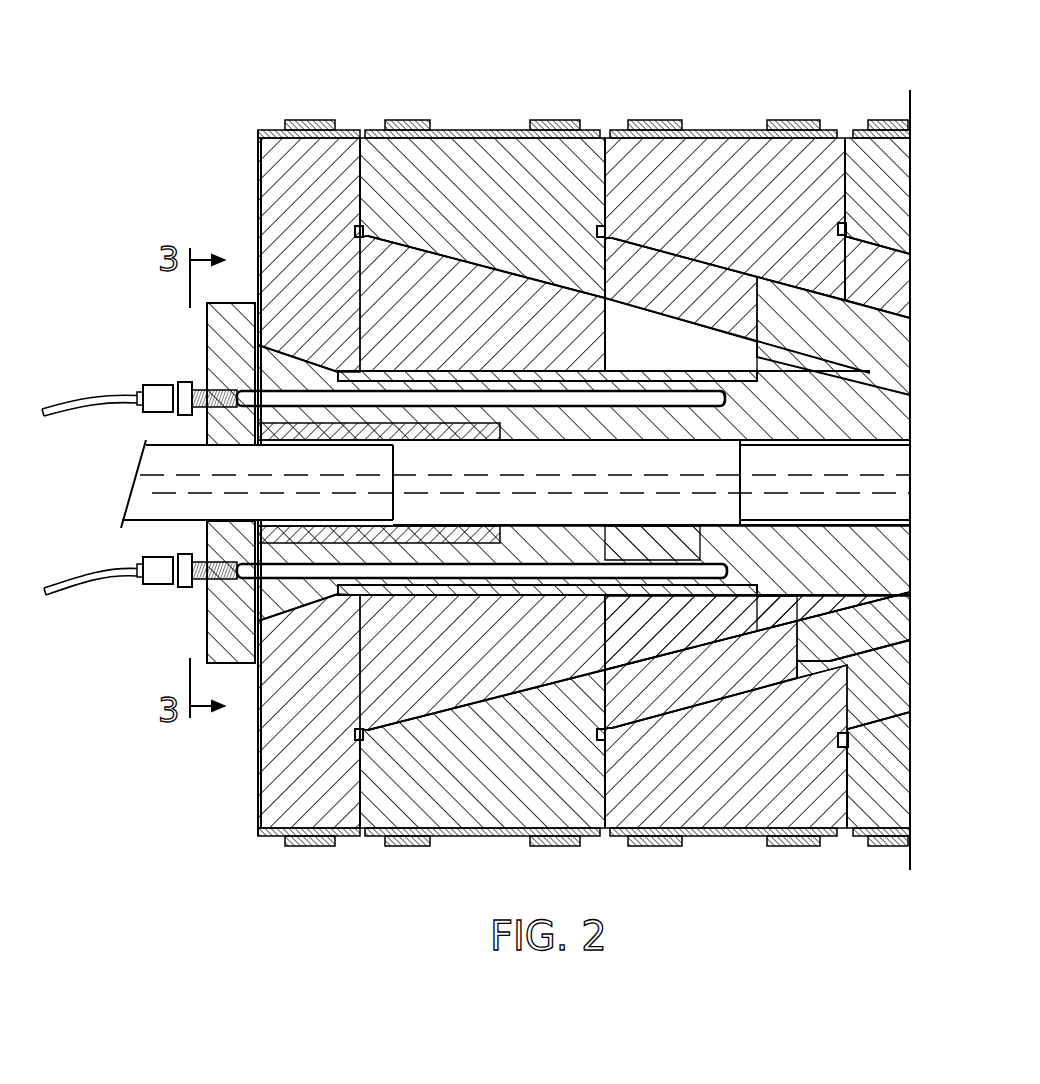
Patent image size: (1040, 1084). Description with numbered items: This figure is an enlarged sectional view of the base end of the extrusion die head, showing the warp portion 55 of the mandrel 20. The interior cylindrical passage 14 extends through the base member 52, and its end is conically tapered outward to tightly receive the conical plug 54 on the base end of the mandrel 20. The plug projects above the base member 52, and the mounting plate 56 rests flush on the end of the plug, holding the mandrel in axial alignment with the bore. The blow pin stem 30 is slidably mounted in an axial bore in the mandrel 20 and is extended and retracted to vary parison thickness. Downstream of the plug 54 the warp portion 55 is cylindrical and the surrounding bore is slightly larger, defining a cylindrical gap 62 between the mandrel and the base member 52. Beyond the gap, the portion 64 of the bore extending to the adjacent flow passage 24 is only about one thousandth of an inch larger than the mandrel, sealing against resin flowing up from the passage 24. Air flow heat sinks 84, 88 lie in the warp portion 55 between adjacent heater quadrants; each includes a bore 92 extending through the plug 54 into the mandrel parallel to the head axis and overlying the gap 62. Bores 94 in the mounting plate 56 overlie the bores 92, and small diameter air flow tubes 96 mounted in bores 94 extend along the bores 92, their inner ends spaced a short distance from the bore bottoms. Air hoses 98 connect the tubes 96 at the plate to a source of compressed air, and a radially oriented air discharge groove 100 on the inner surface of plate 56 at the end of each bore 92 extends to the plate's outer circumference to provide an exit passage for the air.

The interior cylindrical passage 14 is at (556, 378).
The mandrel 20 is at (880, 410).
The flow passage 24 is at (697, 640).
The blow pin stem 30 is at (880, 462).
The base member 52 is at (313, 768).
The conical plug 54 is at (283, 595).
The warp portion 55 is at (610, 378).
The mounting plate 56 is at (213, 353).
The cylindrical gap 62 is at (653, 538).
The bore portion 64 is at (773, 600).
The air flow heat sink 84 is at (490, 392).
The air flow heat sink 88 is at (488, 580).
The bore 92 is at (726, 568).
The bore 94 is at (207, 583).
The air flow tube 96 is at (650, 573).
The air hose 98 is at (83, 573).
The air discharge groove 100 is at (255, 657).